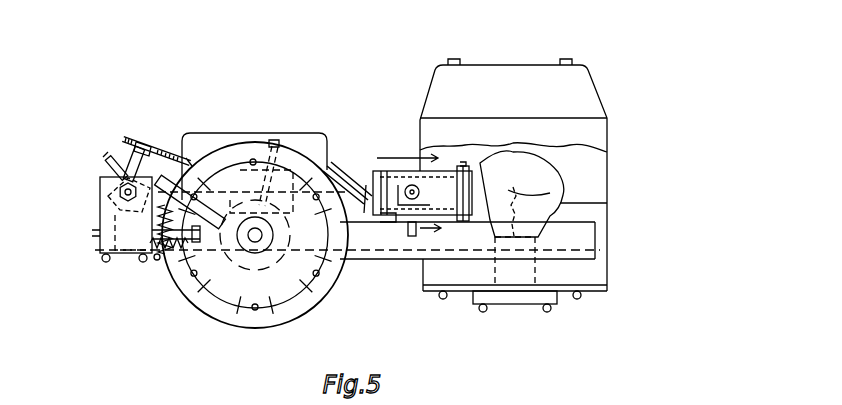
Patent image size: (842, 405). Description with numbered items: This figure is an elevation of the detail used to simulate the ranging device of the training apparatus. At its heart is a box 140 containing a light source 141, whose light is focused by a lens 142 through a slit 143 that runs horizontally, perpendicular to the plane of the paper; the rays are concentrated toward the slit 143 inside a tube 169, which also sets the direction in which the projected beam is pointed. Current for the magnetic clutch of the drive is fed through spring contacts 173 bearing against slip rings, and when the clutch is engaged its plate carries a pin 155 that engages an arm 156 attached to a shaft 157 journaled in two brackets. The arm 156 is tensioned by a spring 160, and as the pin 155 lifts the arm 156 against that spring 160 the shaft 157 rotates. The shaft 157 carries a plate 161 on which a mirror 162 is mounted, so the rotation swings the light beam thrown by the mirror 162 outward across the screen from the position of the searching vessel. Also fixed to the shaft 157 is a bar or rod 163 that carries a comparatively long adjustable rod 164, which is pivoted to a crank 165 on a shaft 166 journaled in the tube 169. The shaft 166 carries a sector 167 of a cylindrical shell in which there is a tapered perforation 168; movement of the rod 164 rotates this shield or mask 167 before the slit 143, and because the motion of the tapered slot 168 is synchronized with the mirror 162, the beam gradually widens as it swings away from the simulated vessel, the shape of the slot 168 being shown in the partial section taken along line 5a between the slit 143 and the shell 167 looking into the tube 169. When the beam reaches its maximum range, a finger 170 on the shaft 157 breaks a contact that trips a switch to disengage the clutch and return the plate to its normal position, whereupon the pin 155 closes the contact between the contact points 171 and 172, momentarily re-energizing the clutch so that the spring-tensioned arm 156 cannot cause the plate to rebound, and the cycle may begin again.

The box 140 is at (560, 170).
The light source 141 is at (550, 193).
The lens 142 is at (473, 193).
The slit 143 is at (363, 192).
The pin 155 is at (165, 258).
The arm 156 is at (208, 210).
The shaft 157 is at (113, 193).
The spring 160 is at (152, 237).
The plate 161 is at (113, 165).
The mirror 162 is at (124, 162).
The bar or rod 163 is at (143, 167).
The adjustable rod 164 is at (165, 207).
The crank 165 is at (415, 238).
The shaft 166 is at (412, 172).
The sector of a cylindrical shell 167 is at (385, 172).
The tapered perforation 168 is at (388, 218).
The tube 169 is at (440, 163).
The finger 170 is at (107, 203).
The contact point 171 is at (200, 243).
The contact point 172 is at (180, 250).
The spring contact 173 is at (243, 170).
The section line 5a is at (421, 197).